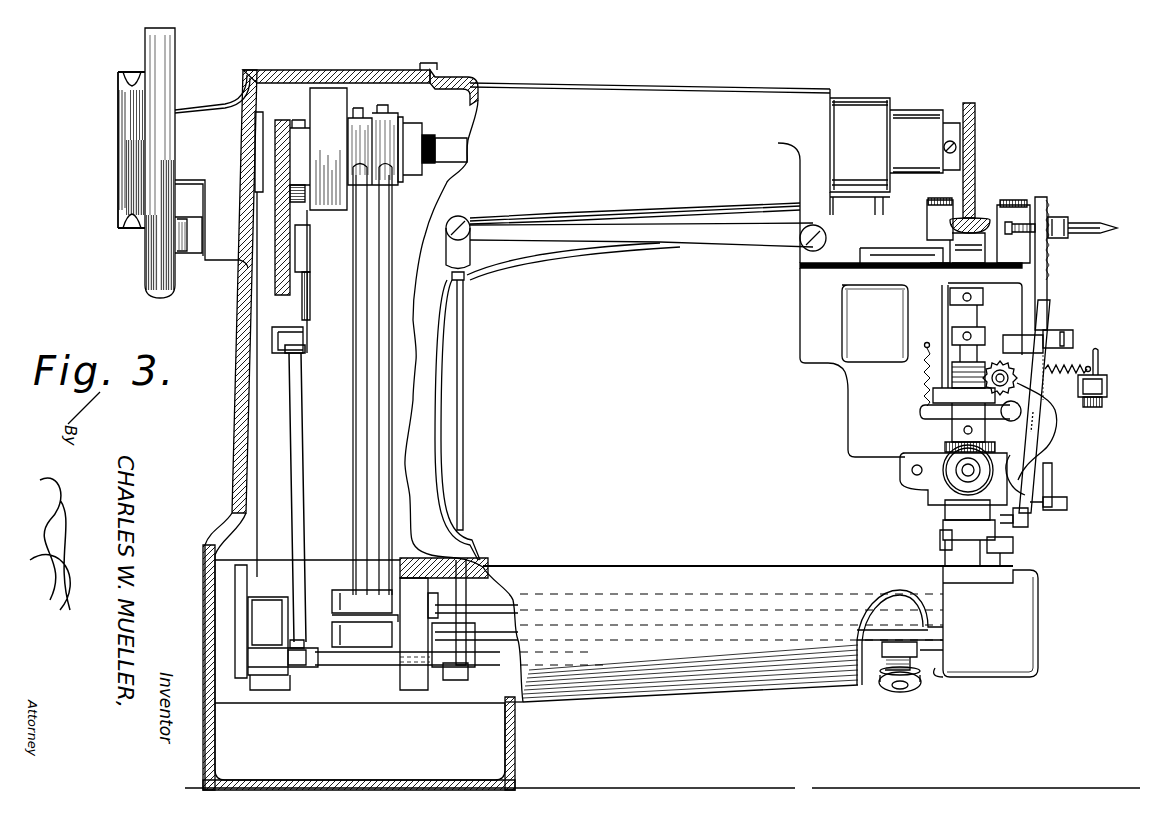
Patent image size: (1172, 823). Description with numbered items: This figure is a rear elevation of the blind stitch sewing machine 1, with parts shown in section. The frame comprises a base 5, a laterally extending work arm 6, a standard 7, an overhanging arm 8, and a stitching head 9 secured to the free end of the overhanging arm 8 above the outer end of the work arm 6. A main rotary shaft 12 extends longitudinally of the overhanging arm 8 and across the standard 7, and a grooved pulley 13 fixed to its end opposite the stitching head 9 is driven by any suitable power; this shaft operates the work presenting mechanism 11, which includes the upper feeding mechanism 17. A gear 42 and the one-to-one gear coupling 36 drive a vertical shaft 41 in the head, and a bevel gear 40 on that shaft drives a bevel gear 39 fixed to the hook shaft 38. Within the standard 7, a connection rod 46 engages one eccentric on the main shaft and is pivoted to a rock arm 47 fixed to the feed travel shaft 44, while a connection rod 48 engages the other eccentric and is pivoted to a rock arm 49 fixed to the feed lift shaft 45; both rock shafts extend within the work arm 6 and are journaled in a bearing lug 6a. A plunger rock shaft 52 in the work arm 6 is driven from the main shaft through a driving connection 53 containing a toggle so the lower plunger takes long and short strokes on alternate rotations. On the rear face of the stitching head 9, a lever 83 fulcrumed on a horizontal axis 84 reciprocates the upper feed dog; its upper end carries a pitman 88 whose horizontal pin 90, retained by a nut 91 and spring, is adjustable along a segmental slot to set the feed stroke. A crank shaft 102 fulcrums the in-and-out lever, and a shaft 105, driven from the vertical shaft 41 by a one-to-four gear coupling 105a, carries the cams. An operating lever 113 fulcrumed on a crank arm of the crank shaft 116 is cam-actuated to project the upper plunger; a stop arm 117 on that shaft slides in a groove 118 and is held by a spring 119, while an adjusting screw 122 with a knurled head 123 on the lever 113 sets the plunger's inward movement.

The sewing machine frame standard 1 is at (428, 418).
The base 5 is at (517, 737).
The work arm 6 is at (632, 582).
The bearing lug 6a is at (417, 678).
The standard 7 is at (630, 441).
The overhanging arm 8 is at (622, 105).
The stitching head 9 is at (862, 380).
The work presenting mechanism 11 is at (1017, 548).
The main rotary shaft 12 is at (437, 147).
The grooved pulley 13 is at (122, 135).
The upper feeding mechanism 17 is at (1034, 483).
The gear coupling 36 is at (978, 187).
The shaft 38 is at (967, 468).
The bevel gear 39 is at (963, 478).
The bevel gear 40 is at (947, 444).
The vertical shaft 41 is at (968, 318).
The gear 42 is at (945, 215).
The feed travel shaft 44 is at (478, 600).
The feed lift shaft 45 is at (490, 630).
The connection rod 46 is at (360, 362).
The rock arm 47 is at (352, 590).
The connection rod 48 is at (376, 397).
The rock arm 49 is at (352, 645).
The plunger rock shaft 52 is at (390, 662).
The driving connection 53 is at (299, 258).
The lever 83 is at (1034, 447).
The horizontal axis 84 is at (1072, 337).
The pitman 88 is at (1055, 216).
The horizontal pin 90 is at (1070, 224).
The nut 91 is at (1104, 234).
The crank shaft 102 is at (1010, 418).
The shaft 105 is at (1017, 382).
The gear coupling 105a is at (990, 356).
The operating lever 113 is at (1050, 462).
The crank shaft 116 is at (1048, 415).
The stop arm 117 is at (1100, 390).
The groove 118 is at (1055, 380).
The spring 119 is at (1068, 366).
The adjusting screw 122 is at (1027, 522).
The knurled head 123 is at (1068, 504).